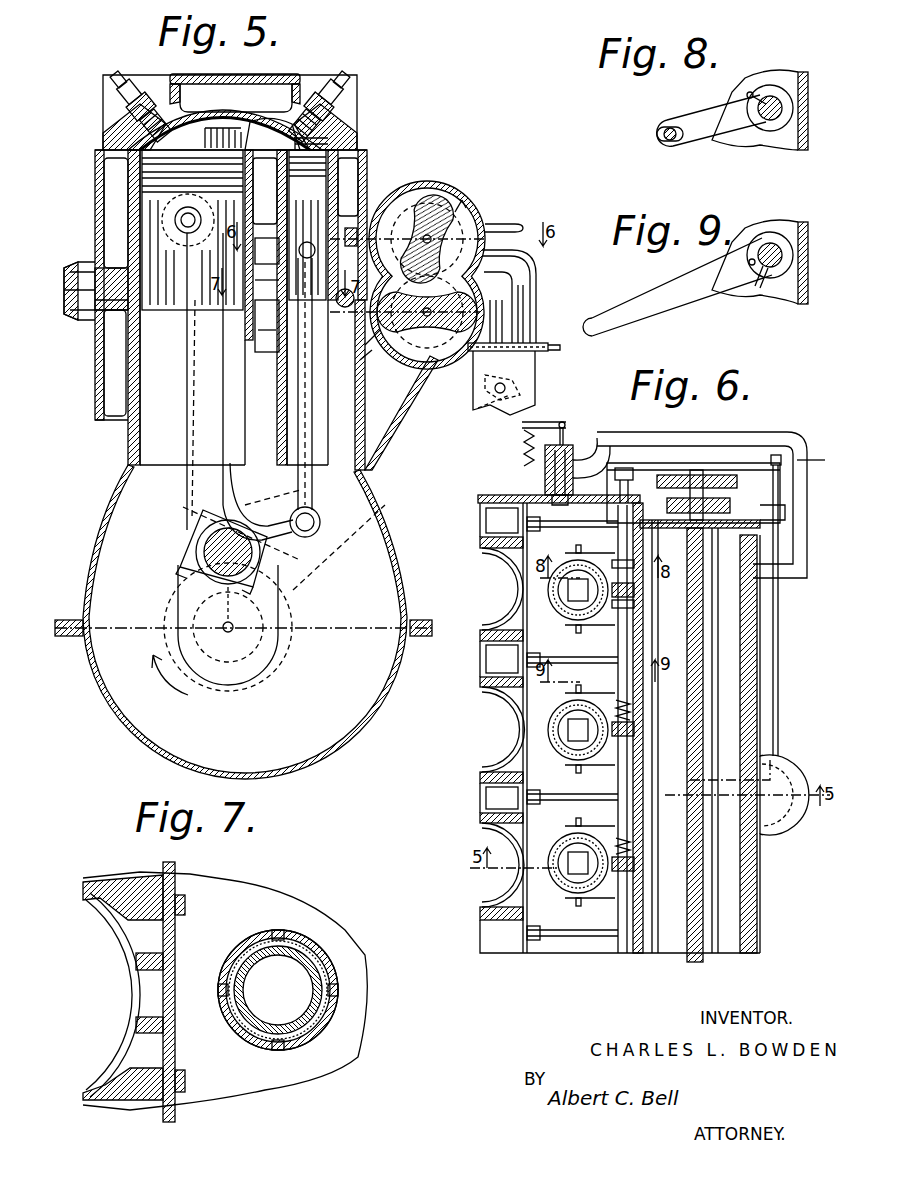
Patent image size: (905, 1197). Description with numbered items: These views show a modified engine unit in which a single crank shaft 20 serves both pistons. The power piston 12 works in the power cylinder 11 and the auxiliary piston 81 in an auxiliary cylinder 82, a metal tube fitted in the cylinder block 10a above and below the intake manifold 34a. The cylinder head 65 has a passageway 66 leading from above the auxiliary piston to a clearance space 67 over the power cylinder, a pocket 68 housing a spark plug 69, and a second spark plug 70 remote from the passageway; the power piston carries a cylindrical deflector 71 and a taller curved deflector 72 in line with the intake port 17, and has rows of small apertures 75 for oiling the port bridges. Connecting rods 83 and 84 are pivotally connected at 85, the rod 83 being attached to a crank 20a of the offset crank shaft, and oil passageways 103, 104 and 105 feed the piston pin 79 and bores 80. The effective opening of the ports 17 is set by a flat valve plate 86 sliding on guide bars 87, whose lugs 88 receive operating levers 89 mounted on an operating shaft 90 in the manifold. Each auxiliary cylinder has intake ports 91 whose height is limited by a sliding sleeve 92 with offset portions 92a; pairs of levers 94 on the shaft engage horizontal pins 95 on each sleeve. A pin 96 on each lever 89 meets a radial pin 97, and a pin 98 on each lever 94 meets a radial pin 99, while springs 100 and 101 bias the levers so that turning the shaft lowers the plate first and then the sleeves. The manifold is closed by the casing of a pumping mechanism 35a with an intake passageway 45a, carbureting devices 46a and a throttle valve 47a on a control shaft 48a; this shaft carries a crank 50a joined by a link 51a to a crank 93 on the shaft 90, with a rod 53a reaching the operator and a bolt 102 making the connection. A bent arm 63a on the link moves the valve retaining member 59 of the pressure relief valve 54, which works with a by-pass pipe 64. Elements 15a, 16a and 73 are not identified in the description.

In FIG. 5, the cylinder block 10a is at (104, 398).
In FIG. 8, the cylinder block 10a is at (740, 150).
In FIG. 9, the cylinder block 10a is at (740, 304).
In FIG. 6, the cylinder block 10a is at (480, 512).
In FIG. 7, the cylinder block 10a is at (222, 880).
In FIG. 5, the power cylinder 11 is at (126, 432).
In FIG. 5, the power piston 12 is at (142, 214).
In FIG. 7, the power piston 12 is at (90, 902).
In FIG. 5, the flange 15a is at (100, 318).
In FIG. 5, the boss 16a is at (80, 320).
In FIG. 5, the intake port 17 is at (236, 320).
In FIG. 7, the intake port 17 is at (115, 975).
In FIG. 5, the crank shaft 20 is at (276, 652).
In FIG. 5, the crank 20a is at (200, 550).
In FIG. 5, the intake manifold 34a is at (335, 270).
In FIG. 6, the intake manifold 34a is at (522, 498).
In FIG. 5, the pumping mechanism 35a is at (458, 196).
In FIG. 8, the pumping mechanism 35a is at (806, 150).
In FIG. 9, the pumping mechanism 35a is at (808, 304).
In FIG. 5, the intake passageway 45a is at (538, 284).
In FIG. 5, the carbureting devices 46a is at (540, 378).
In FIG. 5, the throttle valve 47a is at (480, 392).
In FIG. 5, the control shaft 48a is at (478, 410).
In FIG. 6, the control shaft 48a is at (773, 664).
In FIG. 5, the crank 50a is at (540, 360).
In FIG. 6, the crank 50a is at (775, 492).
In FIG. 5, the link 51a is at (533, 322).
In FIG. 6, the link 51a is at (726, 466).
In FIG. 5, the rod 53a is at (560, 336).
In FIG. 6, the rod 53a is at (810, 456).
In FIG. 6, the pressure relief valve 54 is at (545, 478).
In FIG. 6, the valve retaining member 59 is at (566, 420).
In FIG. 6, the bent arm 63a is at (590, 440).
In FIG. 5, the by-pass pipe 64 is at (521, 221).
In FIG. 6, the by-pass pipe 64 is at (738, 426).
In FIG. 5, the cylinder head 65 is at (222, 76).
In FIG. 5, the passageway 66 is at (280, 140).
In FIG. 5, the clearance space 67 is at (236, 126).
In FIG. 5, the pocket 68 is at (286, 122).
In FIG. 5, the spark plug 69 is at (320, 98).
In FIG. 5, the spark plug 70 is at (125, 110).
In FIG. 5, the deflector 71 is at (232, 122).
In FIG. 5, the second deflector 72 is at (198, 84).
In FIG. 5, the wall 73 is at (352, 147).
In FIG. 7, the apertures 75 is at (120, 920).
In FIG. 5, the piston pin 79 is at (176, 224).
In FIG. 5, the bores 80 is at (178, 226).
In FIG. 5, the auxiliary piston 81 is at (330, 180).
In FIG. 7, the auxiliary piston 81 is at (322, 996).
In FIG. 5, the auxiliary cylinder 82 is at (328, 164).
In FIG. 7, the auxiliary cylinder 82 is at (280, 930).
In FIG. 5, the connecting rod 83 is at (186, 486).
In FIG. 5, the connecting rod 84 is at (314, 492).
In FIG. 5, the pivotal connection 85 is at (320, 520).
In FIG. 5, the flat valve plate 86 is at (268, 250).
In FIG. 6, the flat valve plate 86 is at (523, 700).
In FIG. 7, the flat valve plate 86 is at (176, 1052).
In FIG. 5, the guide bars 87 is at (305, 191).
In FIG. 7, the guide bars 87 is at (186, 908).
In FIG. 5, the lugs 88 is at (268, 304).
In FIG. 5, the operating levers 89 is at (269, 341).
In FIG. 9, the operating levers 89 is at (652, 310).
In FIG. 6, the operating levers 89 is at (566, 930).
In FIG. 5, the operating shaft 90 is at (360, 228).
In FIG. 8, the operating shaft 90 is at (774, 98).
In FIG. 9, the operating shaft 90 is at (772, 244).
In FIG. 6, the operating shaft 90 is at (630, 490).
In FIG. 5, the intake ports 91 is at (372, 372).
In FIG. 5, the sleeve 92 is at (405, 308).
In FIG. 6, the sleeve 92 is at (548, 584).
In FIG. 7, the sleeve 92 is at (330, 942).
In FIG. 5, the offset portions 92a is at (368, 352).
In FIG. 7, the offset portions 92a is at (300, 944).
In FIG. 6, the crank 93 is at (632, 474).
In FIG. 8, the levers 94 is at (700, 112).
In FIG. 6, the levers 94 is at (572, 553).
In FIG. 8, the horizontal pins 95 is at (668, 127).
In FIG. 6, the horizontal pins 95 is at (582, 546).
In FIG. 9, the pin 96 is at (750, 266).
In FIG. 6, the pin 96 is at (616, 522).
In FIG. 9, the pin 97 is at (760, 290).
In FIG. 8, the pin 98 is at (748, 112).
In FIG. 6, the pin 98 is at (634, 592).
In FIG. 8, the pin 99 is at (752, 92).
In FIG. 6, the pin 99 is at (634, 563).
In FIG. 6, the spring 100 is at (622, 548).
In FIG. 6, the spring 101 is at (632, 708).
In FIG. 6, the bolt or screw 102 is at (776, 455).
In FIG. 5, the oil passageway 103 is at (185, 510).
In FIG. 5, the oil passageway 104 is at (336, 547).
In FIG. 5, the oil passageway 105 is at (300, 490).